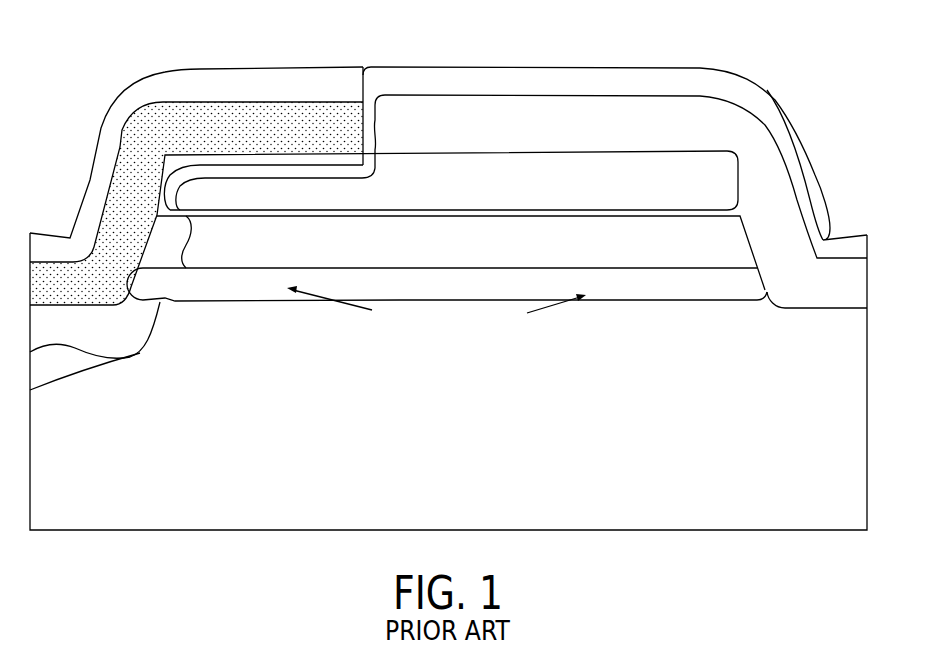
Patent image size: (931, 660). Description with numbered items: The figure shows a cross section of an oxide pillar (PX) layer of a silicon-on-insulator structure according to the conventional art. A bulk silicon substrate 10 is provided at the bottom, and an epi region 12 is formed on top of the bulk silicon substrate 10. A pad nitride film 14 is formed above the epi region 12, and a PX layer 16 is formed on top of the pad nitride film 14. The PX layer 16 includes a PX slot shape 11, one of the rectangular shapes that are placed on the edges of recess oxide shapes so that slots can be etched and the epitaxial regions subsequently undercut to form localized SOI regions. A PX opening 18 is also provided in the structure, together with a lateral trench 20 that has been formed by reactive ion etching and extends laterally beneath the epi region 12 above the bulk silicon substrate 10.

The bulk silicon substrate 10 is at (748, 398).
The PX slot shape 11 is at (318, 112).
The epi region 12 is at (720, 233).
The pad nitride film 14 is at (727, 178).
The PX layer 16 is at (700, 120).
The PX opening 18 is at (151, 290).
The lateral trench 20 is at (406, 336).